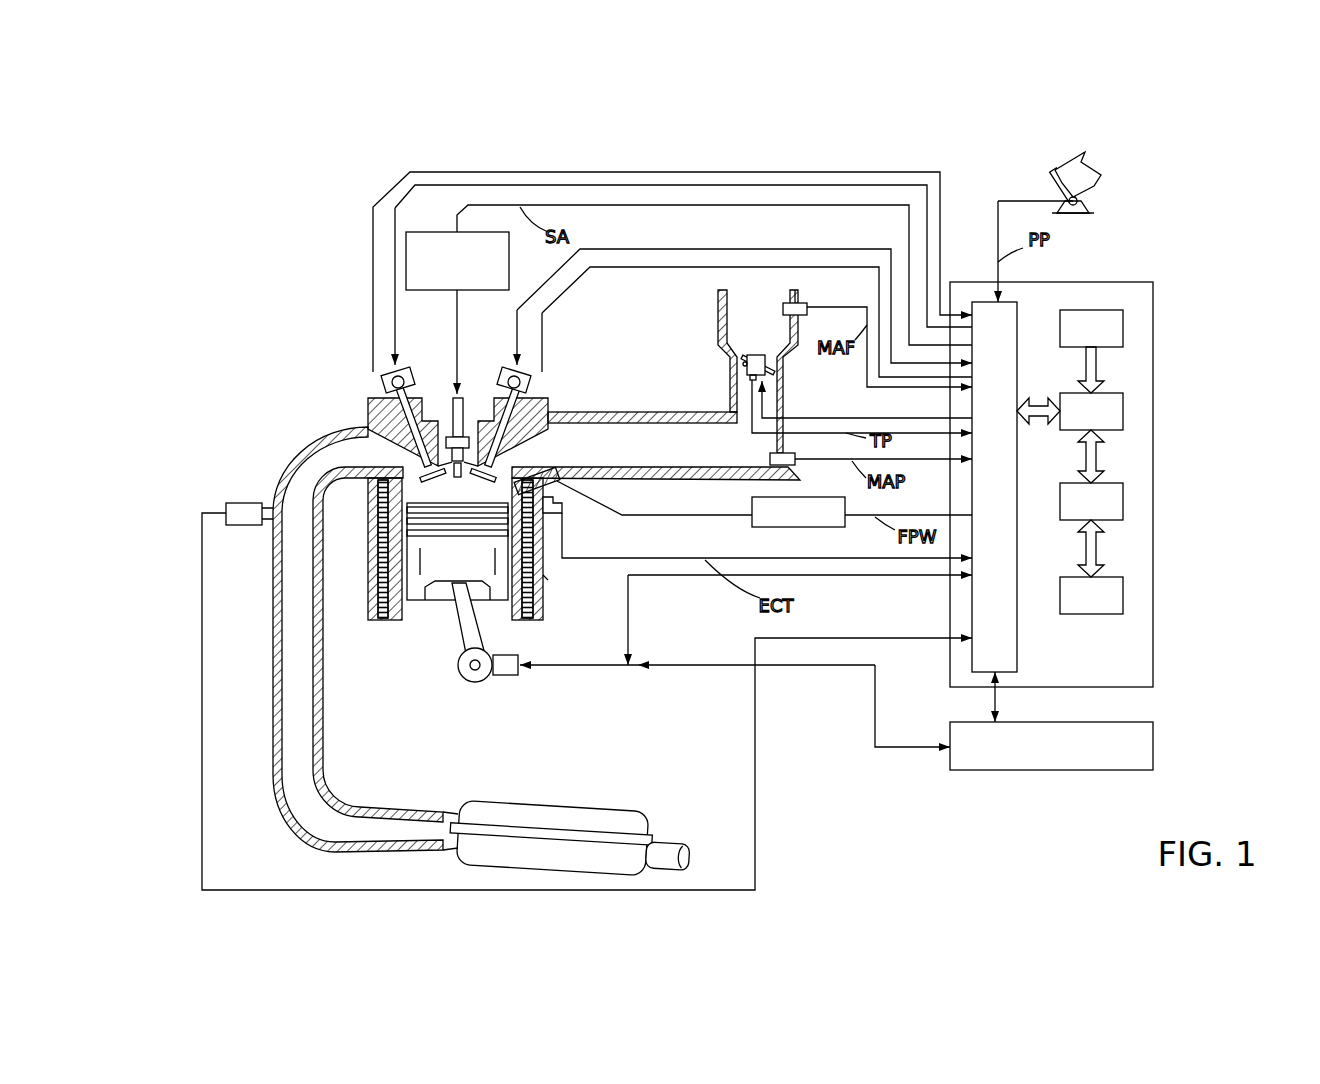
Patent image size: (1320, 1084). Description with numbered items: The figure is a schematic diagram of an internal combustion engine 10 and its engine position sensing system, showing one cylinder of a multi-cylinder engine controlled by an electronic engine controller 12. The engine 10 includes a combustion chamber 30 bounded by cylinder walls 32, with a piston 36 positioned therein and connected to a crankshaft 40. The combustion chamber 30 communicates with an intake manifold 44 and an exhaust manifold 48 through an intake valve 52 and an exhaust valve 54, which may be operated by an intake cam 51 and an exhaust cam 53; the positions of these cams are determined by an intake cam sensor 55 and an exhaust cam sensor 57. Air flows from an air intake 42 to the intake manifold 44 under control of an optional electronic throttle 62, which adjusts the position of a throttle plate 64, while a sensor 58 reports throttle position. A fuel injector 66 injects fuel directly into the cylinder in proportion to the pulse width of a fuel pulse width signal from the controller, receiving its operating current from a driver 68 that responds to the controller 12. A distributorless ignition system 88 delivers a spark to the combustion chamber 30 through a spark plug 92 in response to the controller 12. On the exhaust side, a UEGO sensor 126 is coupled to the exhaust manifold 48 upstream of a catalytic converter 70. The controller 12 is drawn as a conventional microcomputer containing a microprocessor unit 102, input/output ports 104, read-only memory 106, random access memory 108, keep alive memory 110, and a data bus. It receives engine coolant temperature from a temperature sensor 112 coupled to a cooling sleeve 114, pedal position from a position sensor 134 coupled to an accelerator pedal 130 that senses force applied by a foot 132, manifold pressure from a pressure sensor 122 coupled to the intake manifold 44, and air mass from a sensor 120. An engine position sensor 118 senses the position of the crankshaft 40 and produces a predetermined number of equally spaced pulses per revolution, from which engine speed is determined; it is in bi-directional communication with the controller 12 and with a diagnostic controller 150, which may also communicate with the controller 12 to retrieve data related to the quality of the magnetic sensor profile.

The internal combustion engine 10 is at (306, 357).
The electronic engine controller 12 is at (1153, 284).
The combustion chamber 30 is at (455, 490).
The cylinder walls 32 is at (404, 610).
The piston 36 is at (442, 578).
The crankshaft 40 is at (463, 681).
The air intake 42 is at (742, 332).
The intake manifold 44 is at (687, 456).
The exhaust manifold 48 is at (325, 461).
The intake cam 51 is at (508, 365).
The intake valve 52 is at (497, 455).
The exhaust cam 53 is at (404, 365).
The exhaust valve 54 is at (390, 428).
The intake cam sensor 55 is at (527, 387).
The exhaust cam sensor 57 is at (387, 384).
The throttle position sensor 58 is at (748, 378).
The electronic throttle 62 is at (777, 364).
The throttle plate 64 is at (744, 364).
The fuel injector 66 is at (556, 490).
The driver 68 is at (788, 527).
The catalytic converter 70 is at (469, 808).
The distributorless ignition system 88 is at (425, 231).
The spark plug 92 is at (460, 394).
The microprocessor unit 102 is at (1123, 410).
The input/output ports 104 is at (1017, 308).
The read-only memory 106 is at (1123, 326).
The random access memory 108 is at (1123, 500).
The keep alive memory 110 is at (1123, 594).
The temperature sensor 112 is at (558, 512).
The cooling sleeve 114 is at (544, 578).
The engine position sensor 118 is at (500, 678).
The mass air flow sensor 120 is at (805, 301).
The pressure sensor 122 is at (790, 467).
The UEGO sensor 126 is at (226, 505).
The accelerator pedal 130 is at (1053, 181).
The foot 132 is at (1102, 167).
The position sensor 134 is at (1085, 204).
The diagnostic controller 150 is at (1153, 752).